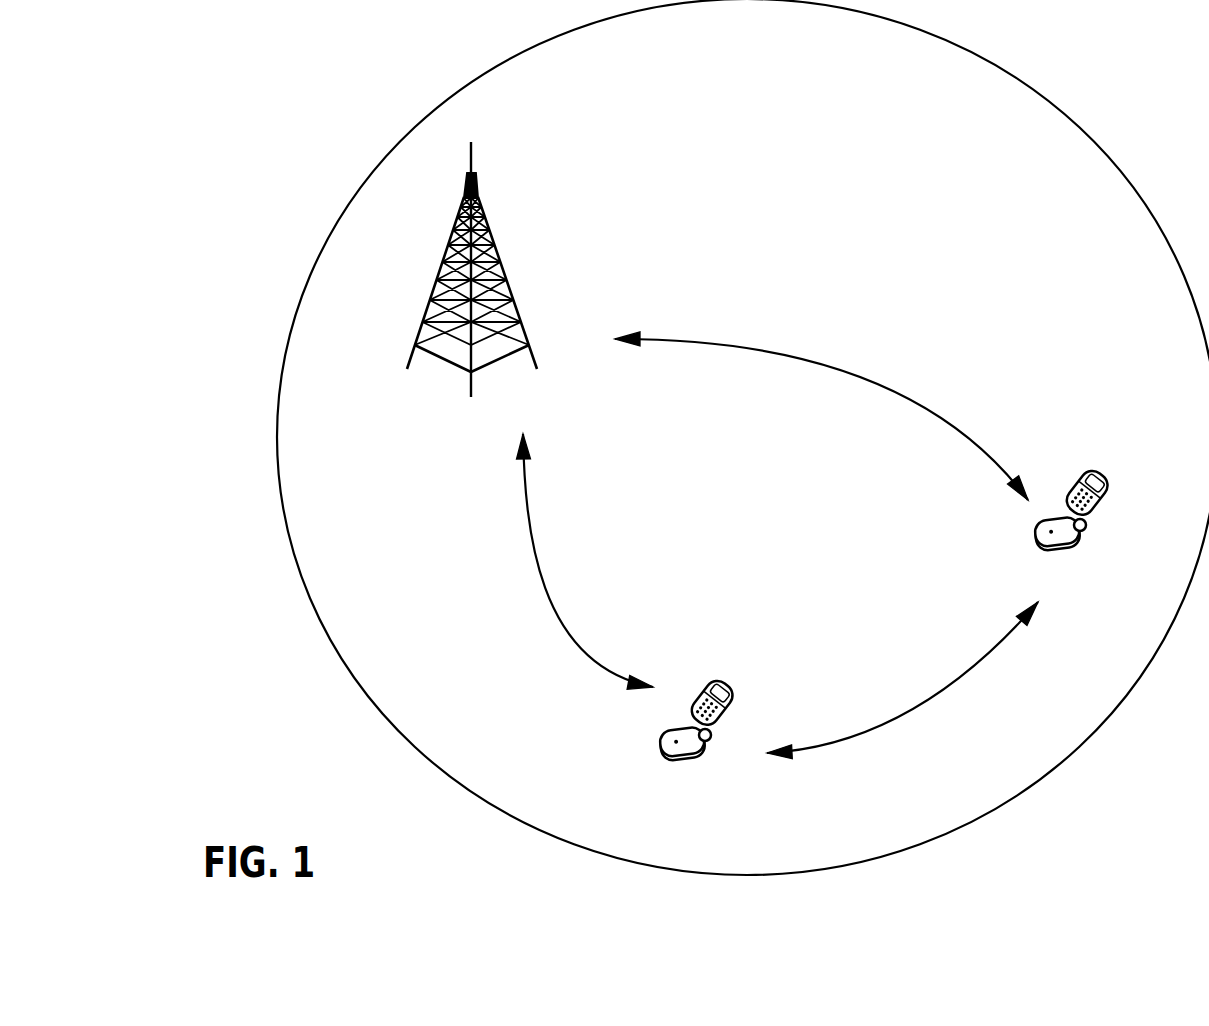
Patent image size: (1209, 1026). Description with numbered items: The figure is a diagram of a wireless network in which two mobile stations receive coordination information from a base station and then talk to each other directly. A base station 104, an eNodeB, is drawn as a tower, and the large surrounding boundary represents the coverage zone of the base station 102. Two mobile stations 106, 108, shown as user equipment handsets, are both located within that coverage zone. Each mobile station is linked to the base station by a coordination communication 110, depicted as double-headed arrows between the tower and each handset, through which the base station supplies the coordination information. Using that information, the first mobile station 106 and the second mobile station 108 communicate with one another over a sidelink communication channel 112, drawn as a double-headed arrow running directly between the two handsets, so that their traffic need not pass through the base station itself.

The coverage zone of the base station 102 is at (1123, 168).
The base station 104 is at (476, 173).
The mobile station 106 is at (717, 683).
The mobile station 108 is at (1092, 468).
The coordination communication 110 is at (918, 400).
The sidelink communication channel 112 is at (988, 657).